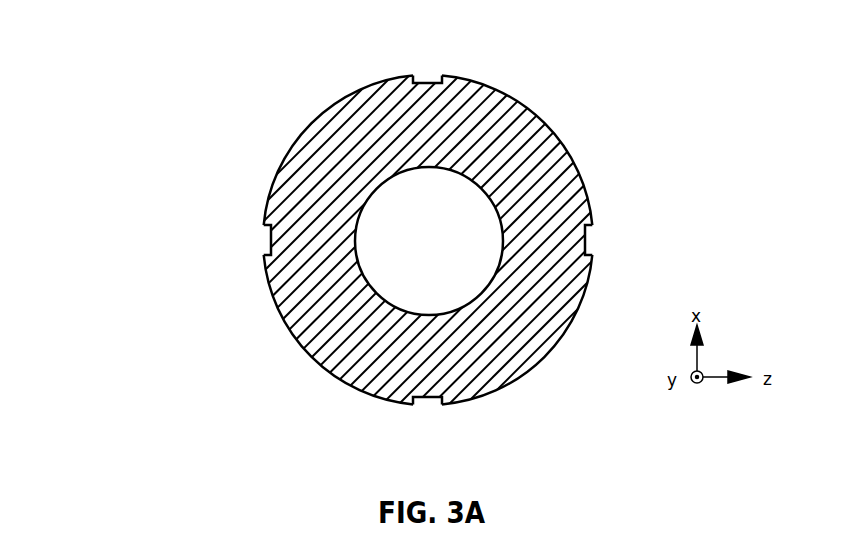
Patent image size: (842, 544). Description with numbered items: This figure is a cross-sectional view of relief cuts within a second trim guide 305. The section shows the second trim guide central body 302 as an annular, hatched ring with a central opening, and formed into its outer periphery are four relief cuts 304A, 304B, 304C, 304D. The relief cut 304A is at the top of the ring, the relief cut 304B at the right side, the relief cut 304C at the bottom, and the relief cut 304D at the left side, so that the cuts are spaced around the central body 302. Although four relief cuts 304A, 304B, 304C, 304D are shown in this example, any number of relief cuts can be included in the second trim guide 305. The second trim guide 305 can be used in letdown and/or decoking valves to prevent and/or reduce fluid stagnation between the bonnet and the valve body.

The second trim guide 305 is at (138, 78).
The second trim guide central body 302 is at (573, 150).
The relief cut 304A is at (424, 77).
The relief cut 304B is at (590, 240).
The relief cut 304C is at (432, 401).
The relief cut 304D is at (267, 250).